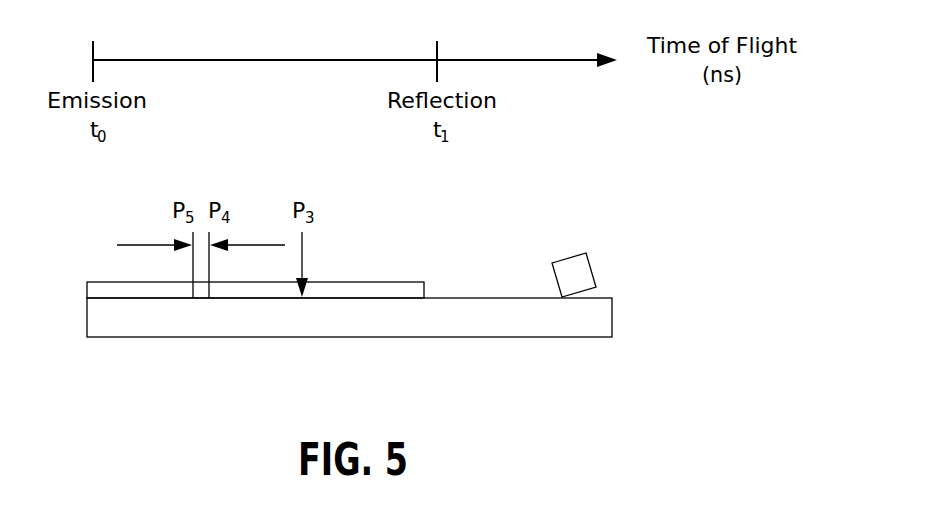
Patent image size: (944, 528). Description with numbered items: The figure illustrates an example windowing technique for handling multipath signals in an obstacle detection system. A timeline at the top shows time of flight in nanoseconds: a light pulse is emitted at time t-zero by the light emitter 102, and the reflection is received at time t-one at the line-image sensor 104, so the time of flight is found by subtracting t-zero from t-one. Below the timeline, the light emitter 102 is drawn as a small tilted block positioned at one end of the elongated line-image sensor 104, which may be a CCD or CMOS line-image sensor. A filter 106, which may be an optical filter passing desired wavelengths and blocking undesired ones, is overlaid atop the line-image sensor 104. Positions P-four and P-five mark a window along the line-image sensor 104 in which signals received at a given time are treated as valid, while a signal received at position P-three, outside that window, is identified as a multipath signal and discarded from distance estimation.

The light emitter 102 is at (573, 255).
The line-image sensor 104 is at (87, 308).
The filter 106 is at (100, 282).